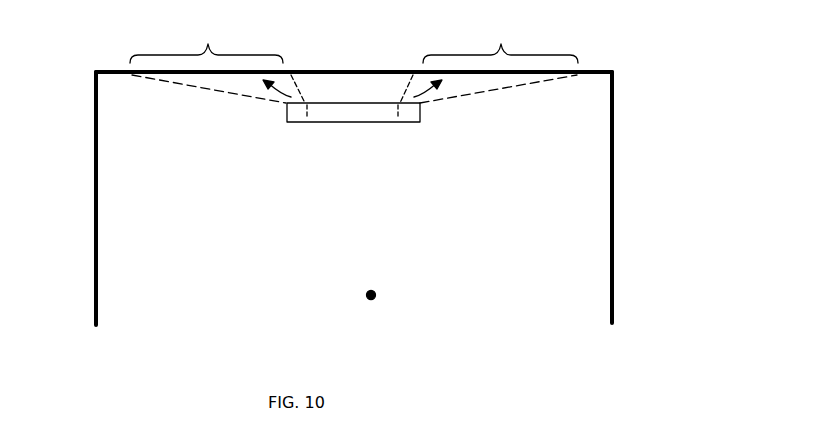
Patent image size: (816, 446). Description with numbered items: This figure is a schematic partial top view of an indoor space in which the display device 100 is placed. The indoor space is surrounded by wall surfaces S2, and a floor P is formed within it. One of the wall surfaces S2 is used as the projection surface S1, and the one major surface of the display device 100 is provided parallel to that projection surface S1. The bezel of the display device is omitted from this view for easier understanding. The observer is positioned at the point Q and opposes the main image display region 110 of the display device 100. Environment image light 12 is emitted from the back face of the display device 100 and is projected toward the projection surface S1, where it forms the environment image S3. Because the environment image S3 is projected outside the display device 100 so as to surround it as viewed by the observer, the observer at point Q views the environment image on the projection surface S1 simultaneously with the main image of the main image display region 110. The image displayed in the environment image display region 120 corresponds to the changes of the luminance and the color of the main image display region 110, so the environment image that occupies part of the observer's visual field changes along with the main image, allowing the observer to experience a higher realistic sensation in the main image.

The display device 100 is at (354, 113).
The main image display region 110 is at (298, 112).
The environment image display region 120 is at (337, 115).
The environment image light 12 is at (291, 73).
The projection surface S1 is at (594, 71).
The wall surfaces S2 is at (95, 212).
The environment image S3 is at (354, 37).
The floor P is at (360, 168).
The point Q is at (376, 295).